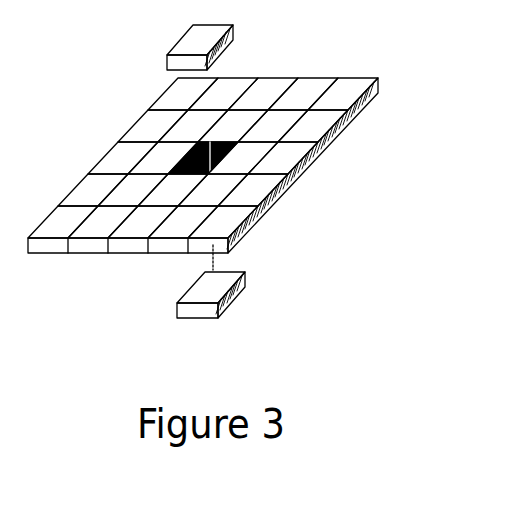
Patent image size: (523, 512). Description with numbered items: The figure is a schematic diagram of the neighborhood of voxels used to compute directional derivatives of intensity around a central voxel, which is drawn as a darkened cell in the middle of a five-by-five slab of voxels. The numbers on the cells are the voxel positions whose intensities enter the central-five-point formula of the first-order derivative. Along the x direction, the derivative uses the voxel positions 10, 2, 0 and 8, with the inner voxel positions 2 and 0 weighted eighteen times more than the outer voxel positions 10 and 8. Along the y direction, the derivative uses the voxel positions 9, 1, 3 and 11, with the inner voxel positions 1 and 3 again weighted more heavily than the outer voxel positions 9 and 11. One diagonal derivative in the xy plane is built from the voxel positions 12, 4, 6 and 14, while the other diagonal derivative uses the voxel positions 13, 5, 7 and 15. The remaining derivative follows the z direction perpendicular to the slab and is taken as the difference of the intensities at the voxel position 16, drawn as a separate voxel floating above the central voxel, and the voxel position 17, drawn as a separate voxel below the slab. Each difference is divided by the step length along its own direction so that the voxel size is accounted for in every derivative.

The voxel position 0 is at (243, 158).
The voxel position 1 is at (233, 126).
The voxel position 2 is at (163, 158).
The voxel position 3 is at (173, 190).
The voxel position 4 is at (273, 126).
The voxel position 5 is at (193, 126).
The voxel position 6 is at (133, 190).
The voxel position 7 is at (213, 190).
The voxel position 8 is at (283, 158).
The voxel position 9 is at (263, 94).
The voxel position 10 is at (123, 158).
The voxel position 11 is at (143, 222).
The voxel position 12 is at (343, 94).
The voxel position 13 is at (183, 94).
The voxel position 14 is at (63, 222).
The voxel position 15 is at (223, 222).
The voxel position 16 is at (200, 47).
The voxel position 17 is at (211, 281).